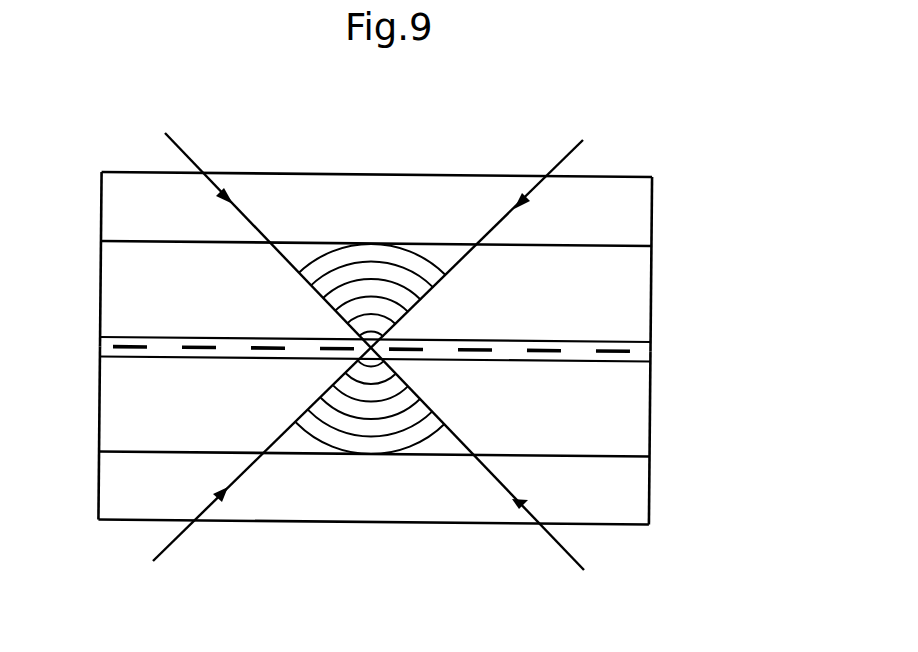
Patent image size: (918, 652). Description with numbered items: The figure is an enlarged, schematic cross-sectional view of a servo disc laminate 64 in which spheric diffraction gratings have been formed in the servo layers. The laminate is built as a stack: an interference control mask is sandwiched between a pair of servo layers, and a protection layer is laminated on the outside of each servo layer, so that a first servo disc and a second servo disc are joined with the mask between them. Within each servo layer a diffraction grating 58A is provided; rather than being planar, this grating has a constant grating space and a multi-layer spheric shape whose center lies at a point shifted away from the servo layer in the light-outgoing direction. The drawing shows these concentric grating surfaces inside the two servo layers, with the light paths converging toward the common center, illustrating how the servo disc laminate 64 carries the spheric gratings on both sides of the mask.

The diffraction grating 58A is at (372, 261).
The servo disc laminate 64 is at (403, 322).